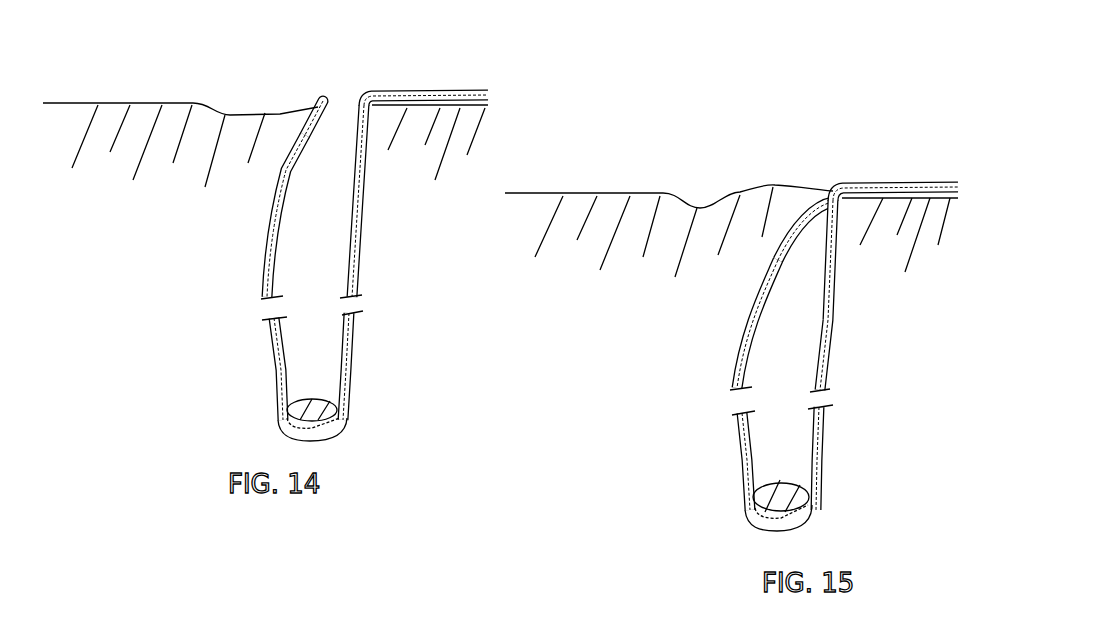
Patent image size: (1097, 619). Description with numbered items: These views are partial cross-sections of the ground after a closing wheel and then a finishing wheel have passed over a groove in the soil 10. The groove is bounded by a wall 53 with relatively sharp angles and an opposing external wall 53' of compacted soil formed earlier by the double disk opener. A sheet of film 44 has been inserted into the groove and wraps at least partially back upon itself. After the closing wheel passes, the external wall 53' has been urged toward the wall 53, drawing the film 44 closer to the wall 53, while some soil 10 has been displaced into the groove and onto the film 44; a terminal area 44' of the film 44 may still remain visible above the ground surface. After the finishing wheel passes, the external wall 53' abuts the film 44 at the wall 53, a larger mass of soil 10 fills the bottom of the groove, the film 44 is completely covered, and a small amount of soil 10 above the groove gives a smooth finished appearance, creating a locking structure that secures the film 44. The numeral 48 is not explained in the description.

In FIG. 14, the soil 10 is at (176, 110).
In FIG. 15, the soil 10 is at (605, 193).
In FIG. 14, the film 44 is at (427, 74).
In FIG. 15, the film 44 is at (860, 245).
In FIG. 14, the terminal area 44' is at (323, 75).
In FIG. 15, the fold 48 is at (780, 247).
In FIG. 14, the wall 53 is at (379, 262).
In FIG. 15, the wall 53 is at (850, 355).
In FIG. 14, the external wall 53' is at (254, 277).
In FIG. 15, the external wall 53' is at (740, 385).